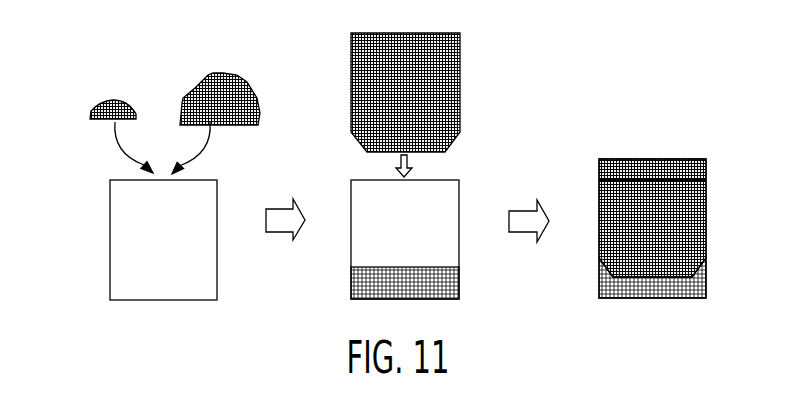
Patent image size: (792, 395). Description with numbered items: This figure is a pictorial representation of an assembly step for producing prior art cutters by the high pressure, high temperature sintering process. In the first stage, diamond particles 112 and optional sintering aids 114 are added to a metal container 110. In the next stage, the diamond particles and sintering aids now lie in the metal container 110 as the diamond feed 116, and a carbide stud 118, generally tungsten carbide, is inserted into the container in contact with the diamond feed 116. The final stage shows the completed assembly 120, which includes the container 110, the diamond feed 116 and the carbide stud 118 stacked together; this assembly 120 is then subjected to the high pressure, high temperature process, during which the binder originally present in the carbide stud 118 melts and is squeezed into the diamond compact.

The metal container 110 is at (110, 227).
The diamond particles 112 is at (228, 87).
The sintering aids 114 is at (113, 108).
The diamond feed 116 is at (448, 280).
The carbide stud 118 is at (447, 77).
The assembly 120 is at (677, 140).